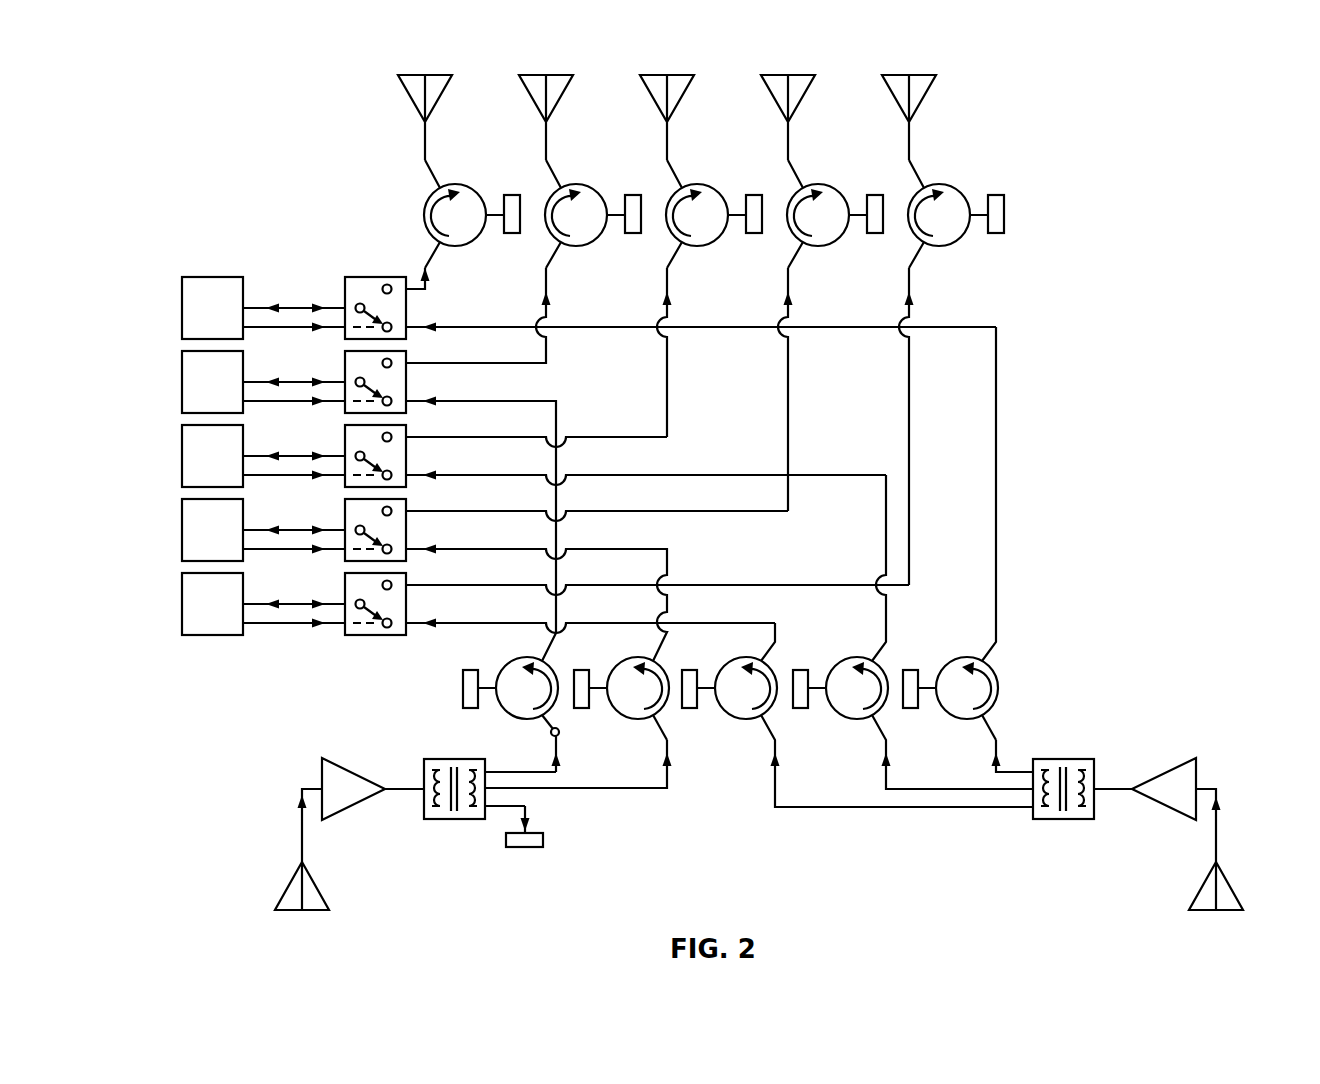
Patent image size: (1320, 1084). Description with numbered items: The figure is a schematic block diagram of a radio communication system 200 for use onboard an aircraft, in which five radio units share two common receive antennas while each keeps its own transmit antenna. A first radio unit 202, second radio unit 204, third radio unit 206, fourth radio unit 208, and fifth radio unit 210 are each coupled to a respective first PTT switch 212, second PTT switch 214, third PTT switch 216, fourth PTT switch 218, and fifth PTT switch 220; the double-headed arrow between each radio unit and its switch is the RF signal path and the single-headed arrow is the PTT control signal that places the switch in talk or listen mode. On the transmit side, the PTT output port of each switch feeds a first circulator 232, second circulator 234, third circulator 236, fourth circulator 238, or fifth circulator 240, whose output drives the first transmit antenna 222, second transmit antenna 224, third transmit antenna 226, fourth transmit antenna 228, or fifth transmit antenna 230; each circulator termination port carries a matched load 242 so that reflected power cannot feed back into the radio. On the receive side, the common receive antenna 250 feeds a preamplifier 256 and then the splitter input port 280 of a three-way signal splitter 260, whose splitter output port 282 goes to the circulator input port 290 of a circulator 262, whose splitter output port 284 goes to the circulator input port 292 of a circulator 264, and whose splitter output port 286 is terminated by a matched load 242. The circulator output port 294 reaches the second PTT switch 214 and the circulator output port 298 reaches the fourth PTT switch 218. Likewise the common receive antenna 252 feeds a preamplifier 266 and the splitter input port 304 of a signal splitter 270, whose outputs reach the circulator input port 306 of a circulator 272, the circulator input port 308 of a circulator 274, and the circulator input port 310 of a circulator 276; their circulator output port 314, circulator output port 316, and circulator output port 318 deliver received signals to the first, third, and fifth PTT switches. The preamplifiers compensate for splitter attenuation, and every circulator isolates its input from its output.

The radio communication system 200 is at (186, 137).
The first radio unit 202 is at (182, 312).
The second radio unit 204 is at (182, 387).
The third radio unit 206 is at (182, 460).
The fourth radio unit 208 is at (182, 528).
The fifth radio unit 210 is at (182, 603).
The first PTT switch 212 is at (372, 277).
The second PTT switch 214 is at (345, 370).
The third PTT switch 216 is at (345, 443).
The fourth PTT switch 218 is at (345, 517).
The fifth PTT switch 220 is at (376, 635).
The first transmit antenna 222 is at (412, 75).
The second transmit antenna 224 is at (533, 75).
The third transmit antenna 226 is at (654, 75).
The fourth transmit antenna 228 is at (796, 75).
The fifth transmit antenna 230 is at (917, 75).
The first circulator 232 is at (449, 184).
The second circulator 234 is at (570, 184).
The third circulator 236 is at (691, 184).
The fourth circulator 238 is at (812, 184).
The fifth circulator 240 is at (933, 184).
The matched load 242 is at (512, 234).
The common receive antenna 250 is at (290, 884).
The common receive antenna 252 is at (1229, 888).
The preamplifier 256 is at (322, 765).
The signal splitter 260 is at (437, 820).
The circulator 262 is at (505, 713).
The circulator 264 is at (622, 718).
The preamplifier 266 is at (1197, 770).
The signal splitter 270 is at (1073, 758).
The circulator 272 is at (971, 657).
The circulator 274 is at (858, 657).
The circulator 276 is at (742, 660).
The splitter input port 280 is at (392, 774).
The splitter output port 282 is at (509, 768).
The splitter output port 284 is at (533, 804).
The splitter output port 286 is at (498, 822).
The circulator input port 290 is at (551, 731).
The circulator input port 292 is at (661, 729).
The circulator output port 294 is at (543, 660).
The circulator output port 298 is at (653, 660).
The splitter input port 304 is at (1110, 806).
The circulator input port 306 is at (988, 724).
The circulator input port 308 is at (879, 728).
The circulator input port 310 is at (771, 729).
The circulator output port 314 is at (993, 648).
The circulator output port 316 is at (876, 655).
The circulator output port 318 is at (768, 652).